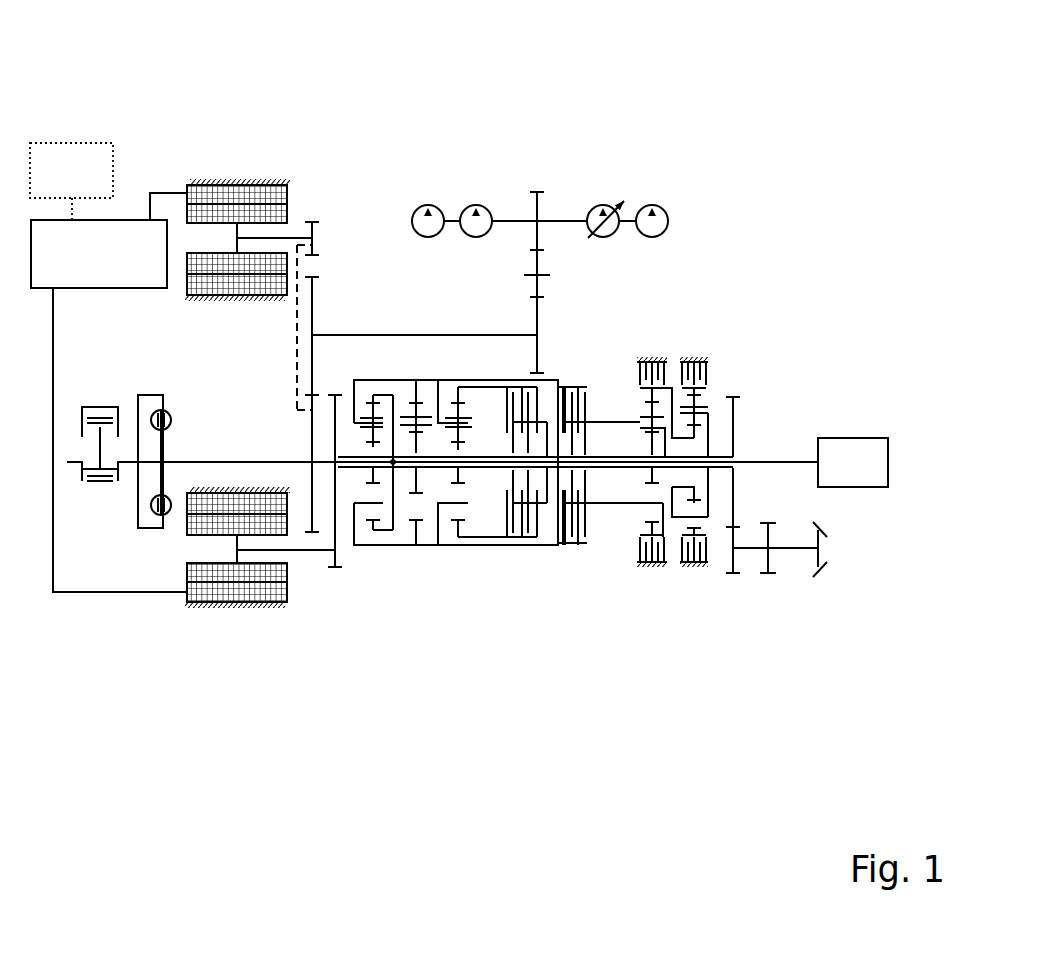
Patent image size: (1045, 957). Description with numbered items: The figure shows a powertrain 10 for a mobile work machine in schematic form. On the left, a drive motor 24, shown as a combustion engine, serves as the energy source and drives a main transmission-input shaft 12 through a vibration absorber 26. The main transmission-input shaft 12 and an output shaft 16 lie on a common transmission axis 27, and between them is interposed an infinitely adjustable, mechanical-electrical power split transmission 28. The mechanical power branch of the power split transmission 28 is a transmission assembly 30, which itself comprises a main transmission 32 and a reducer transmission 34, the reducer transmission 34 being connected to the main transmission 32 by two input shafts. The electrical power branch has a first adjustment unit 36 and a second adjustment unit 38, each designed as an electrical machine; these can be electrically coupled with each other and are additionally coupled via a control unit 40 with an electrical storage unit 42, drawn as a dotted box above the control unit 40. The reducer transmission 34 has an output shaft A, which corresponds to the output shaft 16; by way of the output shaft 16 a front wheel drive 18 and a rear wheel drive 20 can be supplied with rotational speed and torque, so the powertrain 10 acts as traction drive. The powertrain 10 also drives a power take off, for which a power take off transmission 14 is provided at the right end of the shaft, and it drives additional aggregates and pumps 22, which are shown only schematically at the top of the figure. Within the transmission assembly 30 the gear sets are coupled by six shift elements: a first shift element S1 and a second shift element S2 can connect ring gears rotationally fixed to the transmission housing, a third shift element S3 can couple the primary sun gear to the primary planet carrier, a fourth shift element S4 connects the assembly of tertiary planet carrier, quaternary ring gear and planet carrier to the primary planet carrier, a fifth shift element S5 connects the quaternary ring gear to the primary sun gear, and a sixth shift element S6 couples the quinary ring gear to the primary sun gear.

The powertrain 10 is at (555, 193).
The main transmission-input shaft 12 is at (780, 460).
The power take off transmission 14 is at (842, 444).
The output shaft 16 is at (835, 431).
The output shaft of the reducer transmission A is at (737, 410).
The front wheel drive 18 is at (771, 583).
The rear wheel drive 20 is at (824, 583).
The additional aggregates and pumps 22 is at (640, 157).
The drive motor 24 is at (100, 487).
The vibration absorber 26 is at (163, 540).
The transmission axis 27 is at (492, 241).
The power split transmission 28 is at (412, 558).
The transmission assembly 30 is at (444, 558).
The main transmission 32 is at (499, 558).
The reducer transmission 34 is at (693, 586).
The first adjustment unit 36 is at (248, 173).
The second adjustment unit 38 is at (241, 620).
The control unit 40 is at (133, 218).
The electrical storage unit 42 is at (52, 170).
The first shift element S1 is at (658, 350).
The second shift element S2 is at (704, 350).
The third shift element S3 is at (594, 480).
The fourth shift element S4 is at (574, 382).
The fifth shift element S5 is at (502, 478).
The sixth shift element S6 is at (500, 404).